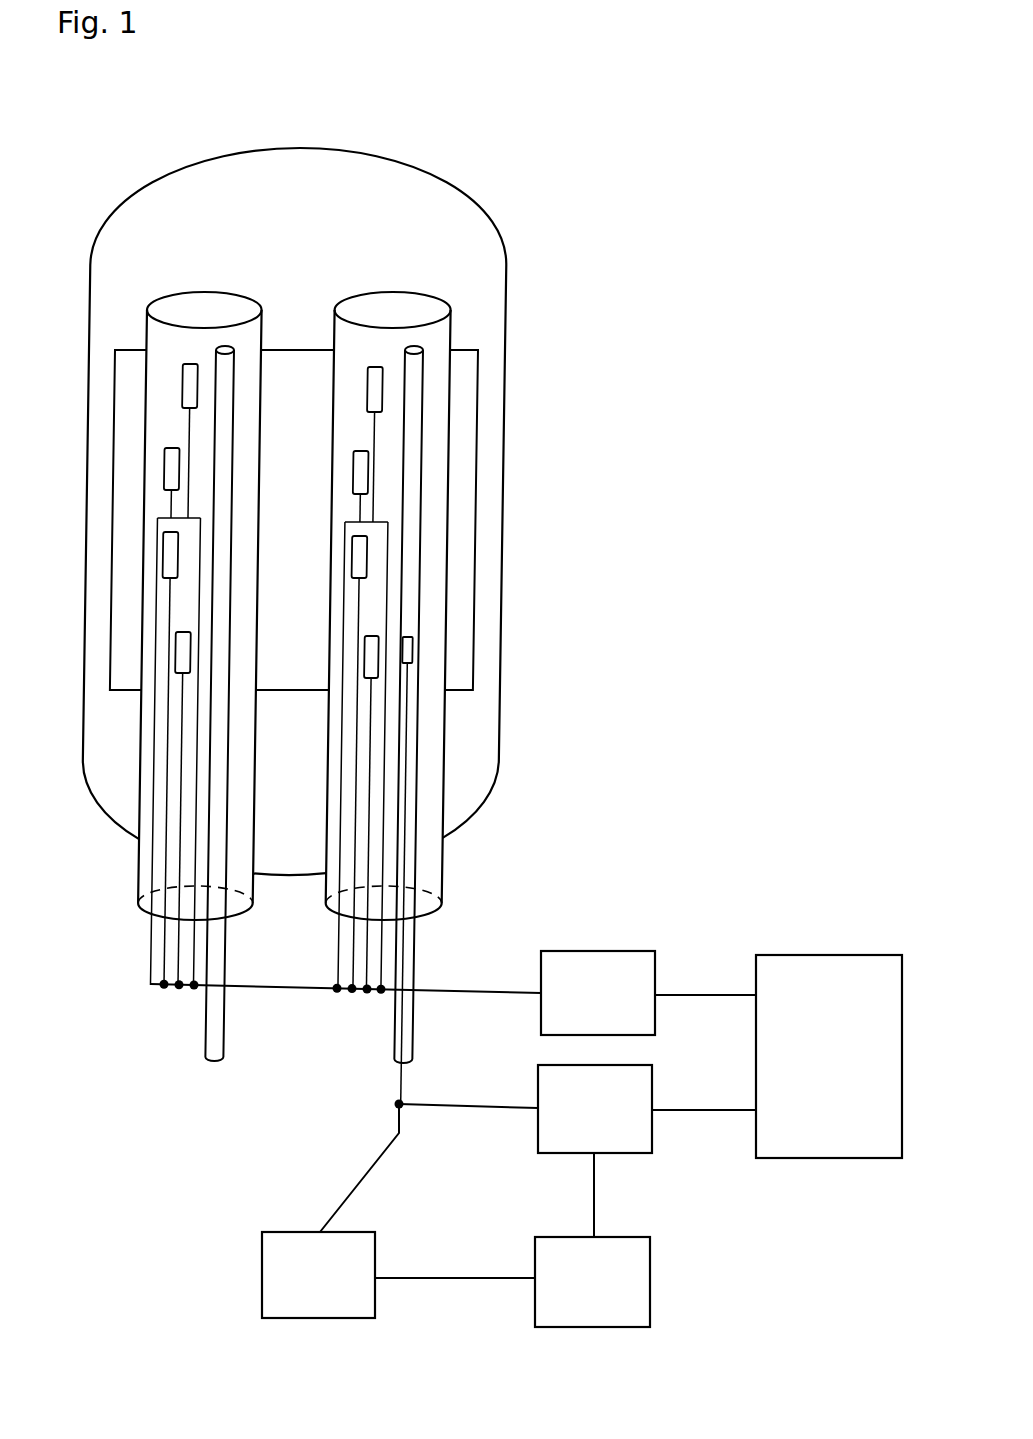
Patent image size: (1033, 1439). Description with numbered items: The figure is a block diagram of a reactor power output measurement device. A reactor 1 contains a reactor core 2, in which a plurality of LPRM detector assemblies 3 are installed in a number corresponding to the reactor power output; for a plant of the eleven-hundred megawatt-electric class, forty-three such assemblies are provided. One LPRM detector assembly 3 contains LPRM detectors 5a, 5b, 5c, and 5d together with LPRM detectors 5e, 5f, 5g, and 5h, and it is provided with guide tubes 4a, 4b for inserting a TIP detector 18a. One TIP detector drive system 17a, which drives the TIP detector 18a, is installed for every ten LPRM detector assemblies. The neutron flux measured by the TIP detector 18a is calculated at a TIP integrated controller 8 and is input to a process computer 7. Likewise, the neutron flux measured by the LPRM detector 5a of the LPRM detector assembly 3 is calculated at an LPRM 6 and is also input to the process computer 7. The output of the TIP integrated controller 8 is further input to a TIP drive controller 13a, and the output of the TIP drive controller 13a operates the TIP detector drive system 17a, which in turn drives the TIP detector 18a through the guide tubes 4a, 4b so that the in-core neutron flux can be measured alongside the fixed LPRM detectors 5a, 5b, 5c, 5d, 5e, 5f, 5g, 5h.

The reactor 1 is at (180, 169).
The reactor core 2 is at (133, 348).
The LPRM detector assembly 3 is at (437, 294).
The guide tube 4a is at (207, 1046).
The guide tube 4b is at (393, 1049).
The LPRM detector 5a is at (182, 389).
The LPRM detector 5b is at (164, 470).
The LPRM detector 5c is at (163, 562).
The LPRM detector 5d is at (176, 656).
The LPRM detector 5e is at (383, 390).
The LPRM detector 5f is at (369, 472).
The LPRM detector 5g is at (367, 555).
The LPRM detector 5h is at (380, 637).
The LPRM 6 is at (607, 1007).
The process computer 7 is at (838, 1073).
The TIP integrated controller 8 is at (608, 1122).
The TIP drive controller 13a is at (625, 1302).
The TIP detector drive system 17a is at (337, 1295).
The TIP detector 18a is at (413, 651).